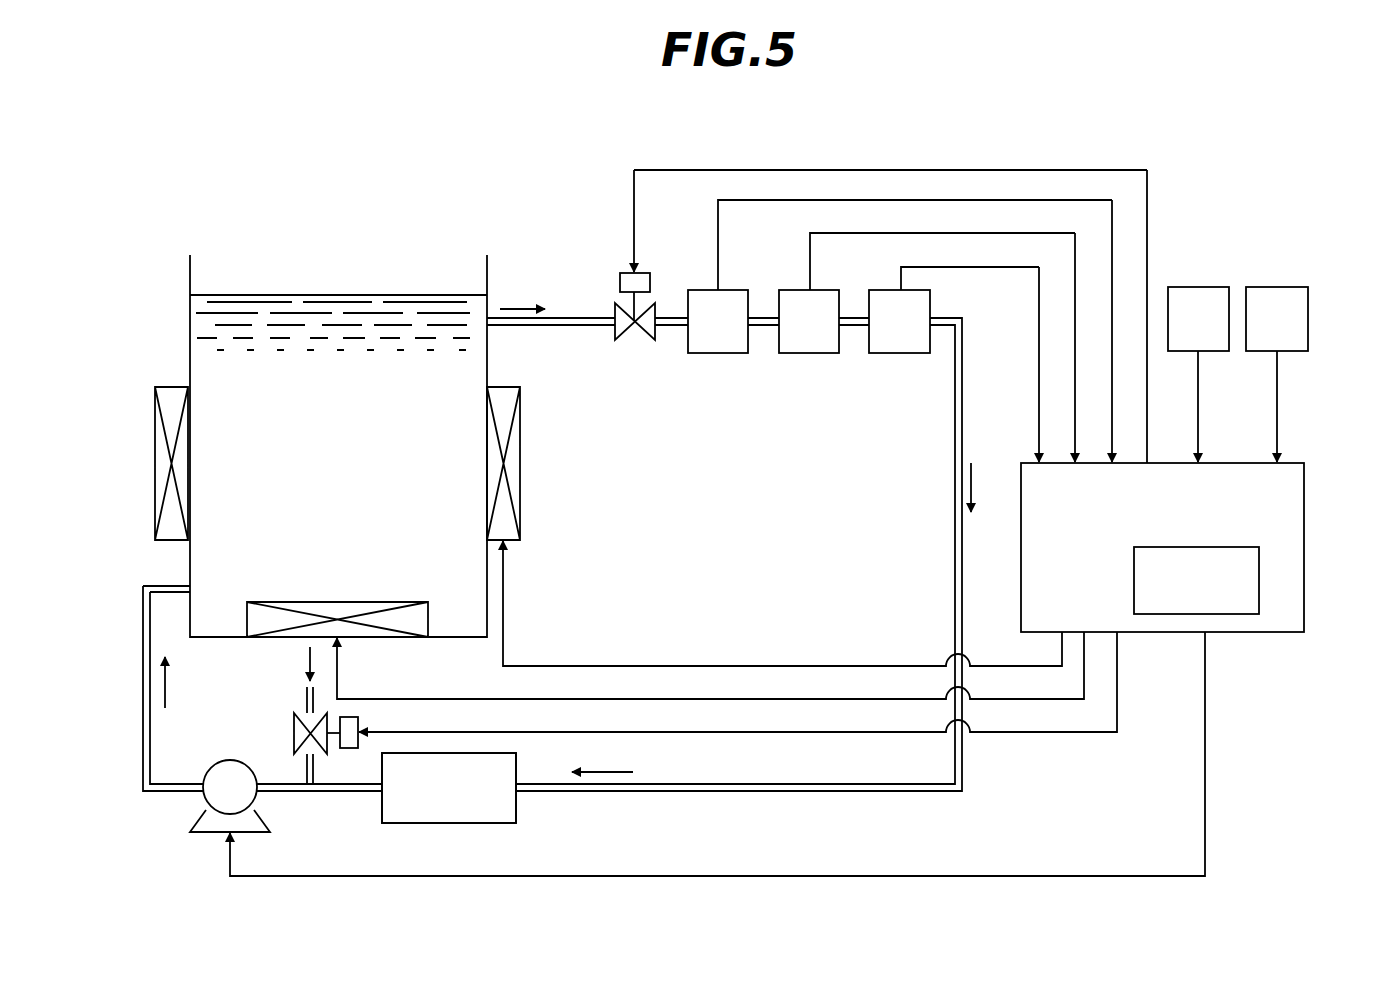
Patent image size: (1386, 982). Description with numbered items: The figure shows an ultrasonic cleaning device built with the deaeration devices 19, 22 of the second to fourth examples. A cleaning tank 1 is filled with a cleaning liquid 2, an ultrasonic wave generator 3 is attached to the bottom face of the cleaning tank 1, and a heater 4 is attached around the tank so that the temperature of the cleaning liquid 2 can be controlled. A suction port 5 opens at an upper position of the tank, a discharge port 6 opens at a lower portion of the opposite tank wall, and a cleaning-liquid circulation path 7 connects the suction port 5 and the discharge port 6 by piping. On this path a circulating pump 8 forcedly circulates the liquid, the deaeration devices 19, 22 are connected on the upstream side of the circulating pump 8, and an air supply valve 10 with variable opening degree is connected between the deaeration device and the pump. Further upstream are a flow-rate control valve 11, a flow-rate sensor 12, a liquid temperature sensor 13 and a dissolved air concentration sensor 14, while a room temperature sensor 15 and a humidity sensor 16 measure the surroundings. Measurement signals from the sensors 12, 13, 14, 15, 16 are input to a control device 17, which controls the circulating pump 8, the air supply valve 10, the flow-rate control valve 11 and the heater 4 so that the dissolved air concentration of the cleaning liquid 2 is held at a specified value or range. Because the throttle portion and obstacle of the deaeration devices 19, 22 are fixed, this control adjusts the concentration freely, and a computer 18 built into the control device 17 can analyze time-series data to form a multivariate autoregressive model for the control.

The cleaning tank 1 is at (190, 318).
The cleaning liquid 2 is at (295, 347).
The ultrasonic wave generator 3 is at (340, 602).
The heater 4 is at (521, 462).
The suction port 5 is at (485, 320).
The discharge port 6 is at (190, 588).
The cleaning-liquid circulation path 7 is at (143, 665).
The circulating pump 8 is at (230, 760).
The air supply valve 10 is at (358, 722).
The flow-rate control valve 11 is at (625, 273).
The flow-rate sensor 12 is at (700, 290).
The liquid temperature sensor 13 is at (790, 290).
The dissolved air concentration sensor 14 is at (880, 290).
The room temperature sensor 15 is at (1197, 287).
The humidity sensor 16 is at (1277, 287).
The control device 17 is at (1304, 518).
The computer 18 is at (1198, 547).
The deaeration device 19 is at (447, 823).
The deaeration device 22 is at (449, 788).